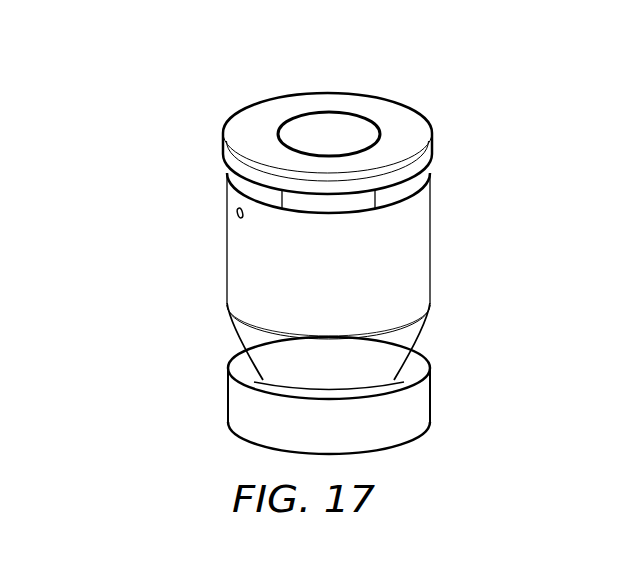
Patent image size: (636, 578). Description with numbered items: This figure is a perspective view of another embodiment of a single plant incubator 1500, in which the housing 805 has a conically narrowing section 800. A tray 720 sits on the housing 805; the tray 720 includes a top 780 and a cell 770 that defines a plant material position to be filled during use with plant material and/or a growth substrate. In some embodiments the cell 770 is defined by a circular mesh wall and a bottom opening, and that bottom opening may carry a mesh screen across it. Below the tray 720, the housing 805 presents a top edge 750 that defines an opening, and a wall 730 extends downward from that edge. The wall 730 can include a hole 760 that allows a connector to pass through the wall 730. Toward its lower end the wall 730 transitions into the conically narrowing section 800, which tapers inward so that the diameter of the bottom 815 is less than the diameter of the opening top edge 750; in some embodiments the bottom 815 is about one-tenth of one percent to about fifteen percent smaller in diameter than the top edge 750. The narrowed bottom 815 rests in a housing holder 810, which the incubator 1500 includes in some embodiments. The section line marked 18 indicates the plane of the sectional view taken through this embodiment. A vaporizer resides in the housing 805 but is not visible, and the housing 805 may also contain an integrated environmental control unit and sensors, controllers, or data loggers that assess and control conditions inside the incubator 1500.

The single plant incubator 1500 is at (158, 83).
The tray 720 is at (419, 86).
The top 780 is at (316, 107).
The cell 770 is at (310, 132).
The hole 760 is at (224, 201).
The top edge 750 is at (430, 185).
The wall 730 is at (432, 233).
The housing 805 is at (451, 267).
The conically narrowing section 800 is at (418, 340).
The bottom 815 is at (268, 352).
The housing holder 810 is at (445, 395).
The section line 18- 18 is at (528, 94).